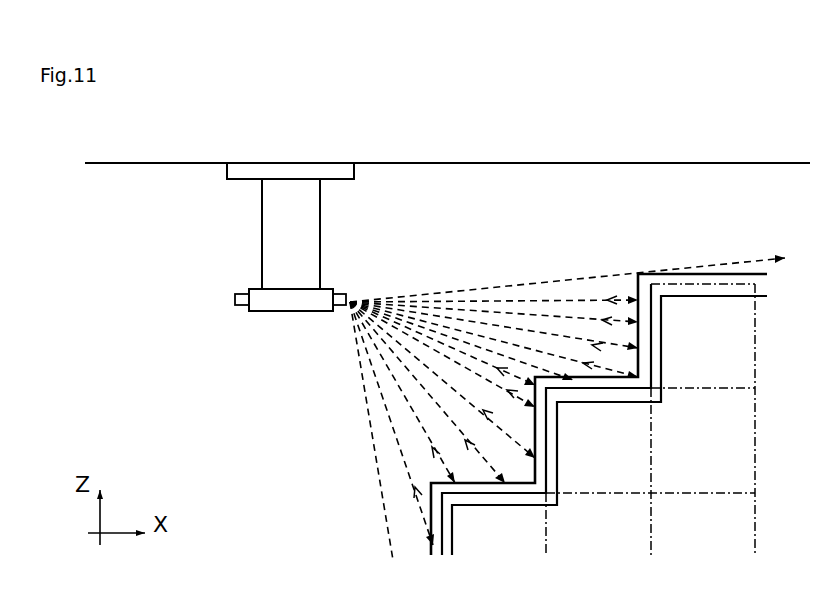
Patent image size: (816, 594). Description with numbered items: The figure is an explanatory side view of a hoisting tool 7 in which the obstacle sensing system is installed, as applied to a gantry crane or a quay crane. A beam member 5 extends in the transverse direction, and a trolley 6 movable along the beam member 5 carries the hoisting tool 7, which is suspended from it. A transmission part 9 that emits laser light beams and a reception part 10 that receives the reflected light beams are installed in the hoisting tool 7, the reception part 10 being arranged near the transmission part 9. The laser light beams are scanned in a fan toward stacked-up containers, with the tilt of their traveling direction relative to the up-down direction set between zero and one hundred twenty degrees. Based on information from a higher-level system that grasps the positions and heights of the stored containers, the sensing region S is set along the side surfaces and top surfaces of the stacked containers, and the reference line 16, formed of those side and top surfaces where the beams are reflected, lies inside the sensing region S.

The beam member 5 is at (495, 164).
The trolley 6 is at (227, 171).
The hoisting tool 7 is at (262, 312).
The transmission part 9 is at (240, 293).
The reception part 10 is at (345, 293).
The reference line 16 is at (618, 390).
The sensing region S is at (661, 360).